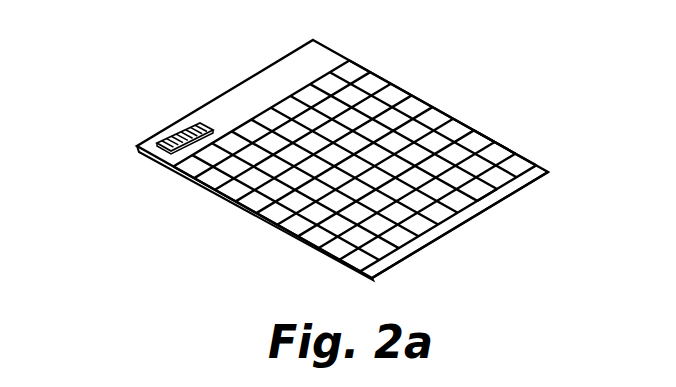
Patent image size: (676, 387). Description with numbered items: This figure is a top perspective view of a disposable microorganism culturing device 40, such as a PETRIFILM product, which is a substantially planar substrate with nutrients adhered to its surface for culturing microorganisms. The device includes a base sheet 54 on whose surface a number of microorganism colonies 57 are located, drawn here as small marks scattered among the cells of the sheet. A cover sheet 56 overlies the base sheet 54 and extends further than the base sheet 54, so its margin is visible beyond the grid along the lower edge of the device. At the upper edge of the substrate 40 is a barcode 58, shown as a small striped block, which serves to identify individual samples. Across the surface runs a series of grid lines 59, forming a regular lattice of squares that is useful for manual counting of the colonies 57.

The disposable microorganism culturing device 40 is at (433, 52).
The base sheet 54 is at (235, 205).
The cover sheet 56 is at (410, 248).
The microorganism colonies 57 is at (293, 203).
The barcode 58 is at (177, 133).
The grid lines 59 is at (495, 160).